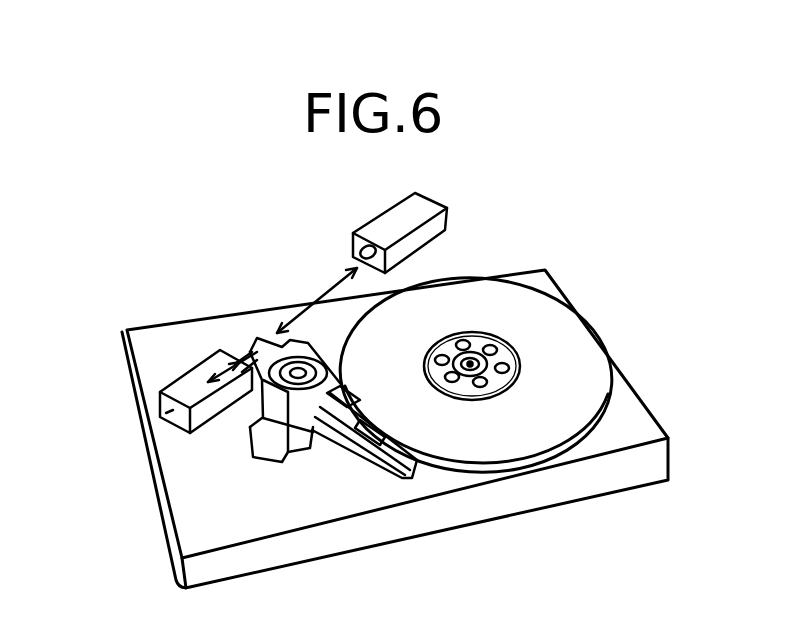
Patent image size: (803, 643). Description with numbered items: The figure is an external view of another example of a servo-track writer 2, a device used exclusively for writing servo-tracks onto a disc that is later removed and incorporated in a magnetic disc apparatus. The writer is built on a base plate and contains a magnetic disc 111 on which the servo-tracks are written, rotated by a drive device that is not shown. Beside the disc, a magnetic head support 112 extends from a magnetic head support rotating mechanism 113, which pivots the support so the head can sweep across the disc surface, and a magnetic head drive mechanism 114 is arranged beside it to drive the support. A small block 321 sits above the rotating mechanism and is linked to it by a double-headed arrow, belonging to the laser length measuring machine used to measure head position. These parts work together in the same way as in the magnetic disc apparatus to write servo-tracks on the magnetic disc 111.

The servo-track writer 2 is at (565, 293).
The magnetic disc 111 is at (576, 357).
The magnetic head support 112 is at (340, 440).
The magnetic head support rotating mechanism 113 is at (273, 418).
The magnetic head drive mechanism 114 is at (164, 410).
The detection unit 321 is at (450, 216).